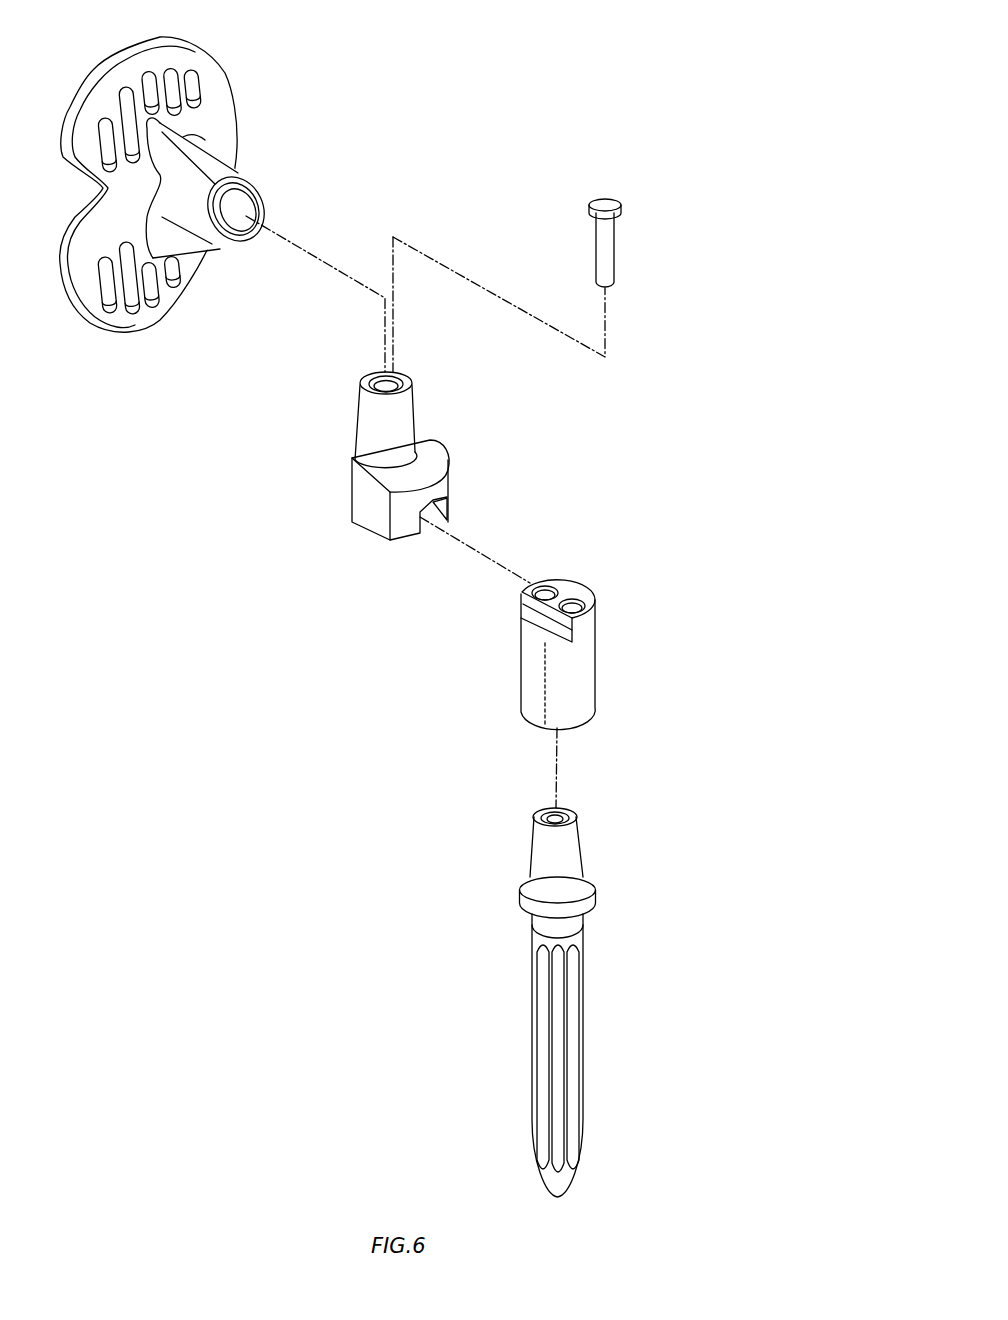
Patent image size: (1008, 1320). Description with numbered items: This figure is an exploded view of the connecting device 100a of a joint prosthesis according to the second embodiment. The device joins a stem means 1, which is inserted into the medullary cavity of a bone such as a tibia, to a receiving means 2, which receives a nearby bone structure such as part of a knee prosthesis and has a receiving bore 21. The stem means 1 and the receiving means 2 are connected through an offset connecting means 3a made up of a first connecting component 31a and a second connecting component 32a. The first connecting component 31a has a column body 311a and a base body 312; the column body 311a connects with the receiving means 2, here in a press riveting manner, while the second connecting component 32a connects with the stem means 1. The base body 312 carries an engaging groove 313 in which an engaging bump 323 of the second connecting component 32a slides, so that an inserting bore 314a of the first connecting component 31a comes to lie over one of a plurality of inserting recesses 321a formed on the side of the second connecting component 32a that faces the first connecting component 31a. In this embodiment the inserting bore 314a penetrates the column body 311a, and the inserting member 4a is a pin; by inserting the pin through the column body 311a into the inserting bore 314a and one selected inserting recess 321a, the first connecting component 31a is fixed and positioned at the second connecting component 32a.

The connecting device 100a is at (748, 72).
The receiving means 2 is at (218, 118).
The receiving bore 21 is at (246, 203).
The inserting member 4a is at (605, 265).
The connecting unit 3a is at (705, 335).
The first connecting component 31a is at (396, 443).
The column body 311a is at (366, 413).
The base body 312 is at (437, 483).
The engaging groove 313 is at (447, 504).
The inserting bore 314a is at (396, 376).
The second connecting component 32a is at (561, 650).
The inserting recesses 321a is at (575, 604).
The engaging bump 323 is at (527, 605).
The stem means 1 is at (572, 1052).